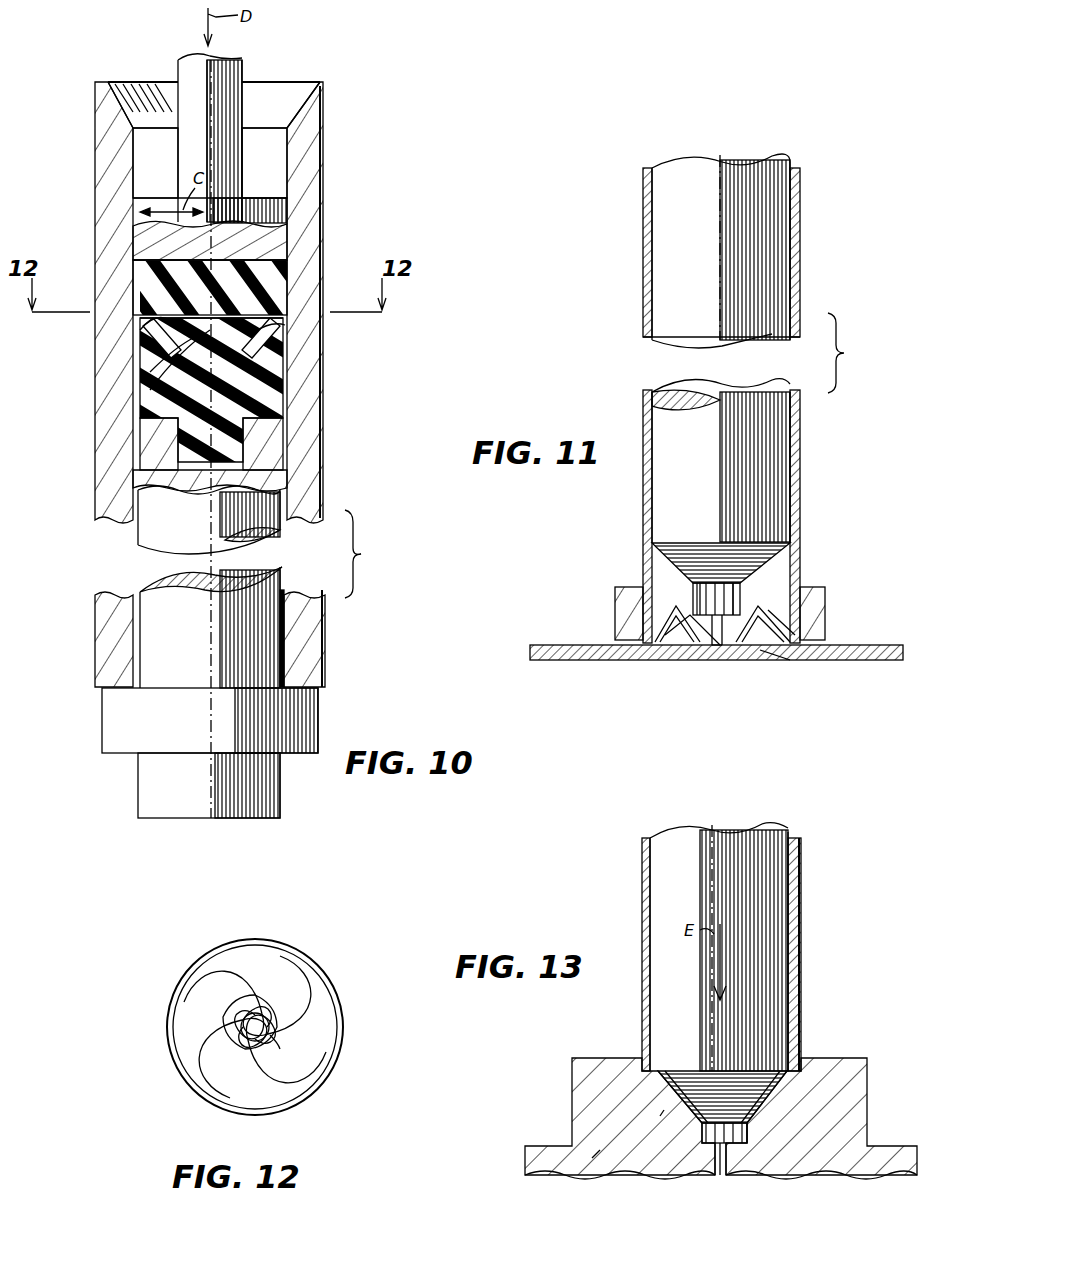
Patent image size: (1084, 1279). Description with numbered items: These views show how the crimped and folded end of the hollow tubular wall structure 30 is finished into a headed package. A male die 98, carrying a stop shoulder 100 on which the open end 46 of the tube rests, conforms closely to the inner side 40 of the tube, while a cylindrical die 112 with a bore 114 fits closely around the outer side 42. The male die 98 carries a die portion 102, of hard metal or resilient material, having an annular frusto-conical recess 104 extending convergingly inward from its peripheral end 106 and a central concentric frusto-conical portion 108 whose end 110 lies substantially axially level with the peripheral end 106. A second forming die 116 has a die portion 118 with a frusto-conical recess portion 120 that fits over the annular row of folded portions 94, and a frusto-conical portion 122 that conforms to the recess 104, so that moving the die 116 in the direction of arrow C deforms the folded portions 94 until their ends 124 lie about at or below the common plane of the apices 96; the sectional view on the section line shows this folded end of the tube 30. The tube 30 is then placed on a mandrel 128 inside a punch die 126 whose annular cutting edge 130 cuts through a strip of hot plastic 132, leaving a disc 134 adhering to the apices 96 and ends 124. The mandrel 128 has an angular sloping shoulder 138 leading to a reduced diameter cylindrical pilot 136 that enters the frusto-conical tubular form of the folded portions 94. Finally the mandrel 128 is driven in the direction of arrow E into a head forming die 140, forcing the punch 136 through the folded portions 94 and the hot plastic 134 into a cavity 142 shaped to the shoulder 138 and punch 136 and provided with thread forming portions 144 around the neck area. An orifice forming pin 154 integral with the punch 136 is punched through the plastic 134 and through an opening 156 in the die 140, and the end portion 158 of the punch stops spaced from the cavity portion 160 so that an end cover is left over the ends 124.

In FIG. 10, the hollow tubular wall structure 30 is at (302, 506).
In FIG. 11, the hollow tubular wall structure 30 is at (800, 246).
In FIG. 12, the hollow tubular wall structure 30 is at (178, 1040).
In FIG. 13, the hollow tubular wall structure 30 is at (642, 872).
In FIG. 10, the inner side of the hollow tubular wall structure 40 is at (262, 440).
In FIG. 10, the outer side of the tubular wall structure 42 is at (128, 495).
In FIG. 10, the open end of the hollow tubular wall structure 46 is at (136, 655).
In FIG. 10, the folded portions 94 is at (145, 386).
In FIG. 11, the folded portions 94 is at (770, 622).
In FIG. 12, the folded portions 94 is at (292, 1070).
In FIG. 10, the apices of the folded portions 96 is at (140, 345).
In FIG. 11, the apices of the folded portions 96 is at (660, 634).
In FIG. 12, the apices of the folded portions 96 is at (272, 950).
In FIG. 10, the male die 98 is at (150, 572).
In FIG. 10, the stop shoulder 100 is at (122, 694).
In FIG. 10, the die portion 102 is at (266, 400).
In FIG. 10, the annular frusto-conical recess 104 is at (276, 370).
In FIG. 10, the peripheral end of the die portion 106 is at (278, 326).
In FIG. 10, the central concentric frusto-conical portion 108 is at (150, 428).
In FIG. 10, the end of the central frusto-conical portion 110 is at (284, 240).
In FIG. 10, the cylindrical die 112 is at (116, 462).
In FIG. 10, the bore 114 is at (287, 174).
In FIG. 10, the second forming die 116 is at (158, 197).
In FIG. 10, the die portion of the second forming die 118 is at (140, 270).
In FIG. 10, the frusto-conical recess portion 120 is at (138, 322).
In FIG. 10, the frusto-conical portion of die portion 118 122 is at (140, 366).
In FIG. 10, the ends of the folded portions 124 is at (278, 256).
In FIG. 11, the ends of the folded portions 124 is at (646, 318).
In FIG. 12, the ends of the folded portions 124 is at (210, 975).
In FIG. 11, the punch die 126 is at (612, 590).
In FIG. 11, the mandrel 128 is at (700, 165).
In FIG. 13, the mandrel 128 is at (716, 836).
In FIG. 11, the annular cutting edge 130 is at (790, 652).
In FIG. 11, the strip of hot plastic 132 is at (612, 645).
In FIG. 11, the disc of hot plastic 134 is at (716, 655).
In FIG. 11, the cylindrical pilot 136 is at (745, 578).
In FIG. 13, the cylindrical pilot 136 is at (706, 1112).
In FIG. 11, the angular sloping shoulder 138 is at (672, 560).
In FIG. 13, the angular sloping shoulder 138 is at (738, 1108).
In FIG. 13, the head forming die 140 is at (604, 1150).
In FIG. 13, the cavity 142 is at (666, 1110).
In FIG. 13, the thread forming portions 144 is at (805, 1110).
In FIG. 11, the orifice forming pin 154 is at (724, 645).
In FIG. 13, the orifice forming pin 154 is at (721, 1150).
In FIG. 13, the opening in the die 156 is at (745, 1140).
In FIG. 11, the end portion of the punch 158 is at (700, 600).
In FIG. 13, the end portion of the punch 158 is at (714, 1128).
In FIG. 13, the cavity portion 160 is at (716, 1150).